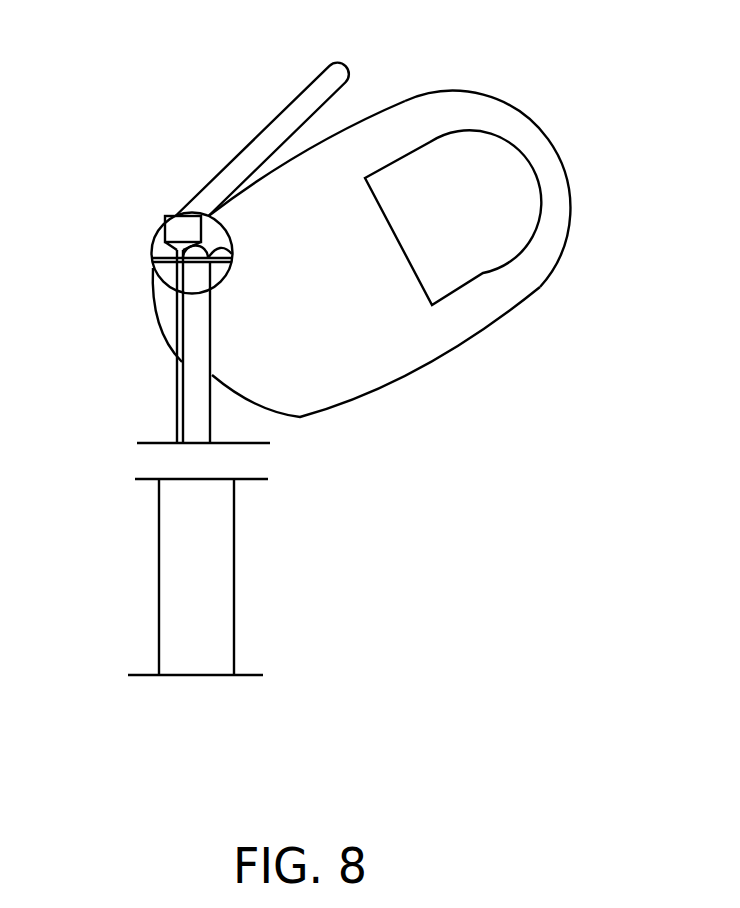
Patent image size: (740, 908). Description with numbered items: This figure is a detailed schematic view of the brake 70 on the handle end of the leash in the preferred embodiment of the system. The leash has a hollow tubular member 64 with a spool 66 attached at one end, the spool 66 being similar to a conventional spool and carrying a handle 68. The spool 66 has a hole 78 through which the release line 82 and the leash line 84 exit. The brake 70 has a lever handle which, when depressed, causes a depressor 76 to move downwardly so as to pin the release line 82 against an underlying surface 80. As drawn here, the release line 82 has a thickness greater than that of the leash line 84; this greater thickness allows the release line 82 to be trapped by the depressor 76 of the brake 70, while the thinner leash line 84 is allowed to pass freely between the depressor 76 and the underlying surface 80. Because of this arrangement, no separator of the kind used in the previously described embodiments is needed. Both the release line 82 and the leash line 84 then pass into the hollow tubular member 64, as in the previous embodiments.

The hollow tubular member 64 is at (234, 565).
The spool 66 is at (418, 113).
The handle 68 is at (550, 165).
The brake 70 is at (300, 93).
The depressor 76 is at (163, 236).
The hole 78 is at (213, 247).
The underlying surface 80 is at (155, 266).
The release line 82 is at (177, 392).
The leash line 84 is at (212, 330).